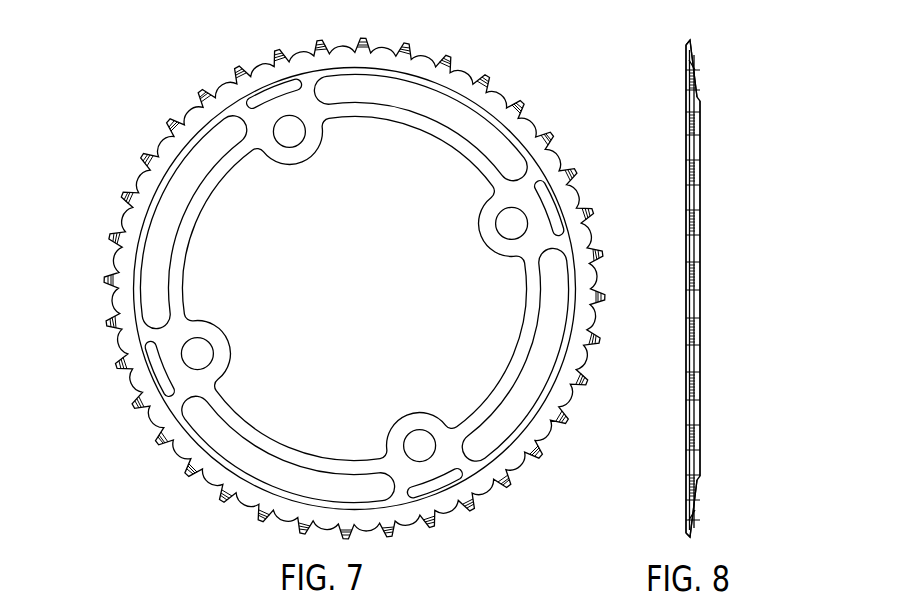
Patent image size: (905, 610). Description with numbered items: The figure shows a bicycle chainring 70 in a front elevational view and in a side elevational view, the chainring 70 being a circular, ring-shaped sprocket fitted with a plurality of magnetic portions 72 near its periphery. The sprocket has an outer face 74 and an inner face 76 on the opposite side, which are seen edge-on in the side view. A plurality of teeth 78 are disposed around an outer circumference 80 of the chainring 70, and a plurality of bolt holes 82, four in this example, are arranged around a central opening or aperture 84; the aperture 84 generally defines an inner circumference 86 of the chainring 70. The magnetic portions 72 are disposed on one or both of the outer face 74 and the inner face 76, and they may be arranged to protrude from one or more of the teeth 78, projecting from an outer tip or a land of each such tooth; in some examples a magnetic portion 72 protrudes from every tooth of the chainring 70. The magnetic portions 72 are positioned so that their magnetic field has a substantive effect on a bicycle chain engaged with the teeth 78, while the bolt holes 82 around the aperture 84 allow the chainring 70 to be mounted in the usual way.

In FIG. 7, the chainring 70 is at (103, 266).
In FIG. 8, the chainring 70 is at (715, 303).
In FIG. 7, the magnetic portions 72 is at (200, 100).
In FIG. 8, the magnetic portions 72 is at (692, 42).
In FIG. 7, the outer face 74 is at (443, 118).
In FIG. 8, the outer face 74 is at (668, 135).
In FIG. 8, the inner face 76 is at (705, 123).
In FIG. 7, the teeth 78 is at (480, 86).
In FIG. 8, the teeth 78 is at (691, 54).
In FIG. 7, the outer circumference 80 is at (525, 467).
In FIG. 8, the outer circumference 80 is at (652, 75).
In FIG. 7, the bolt holes 82 is at (283, 151).
In FIG. 7, the central opening or aperture 84 is at (190, 253).
In FIG. 7, the inner circumference 86 is at (235, 207).